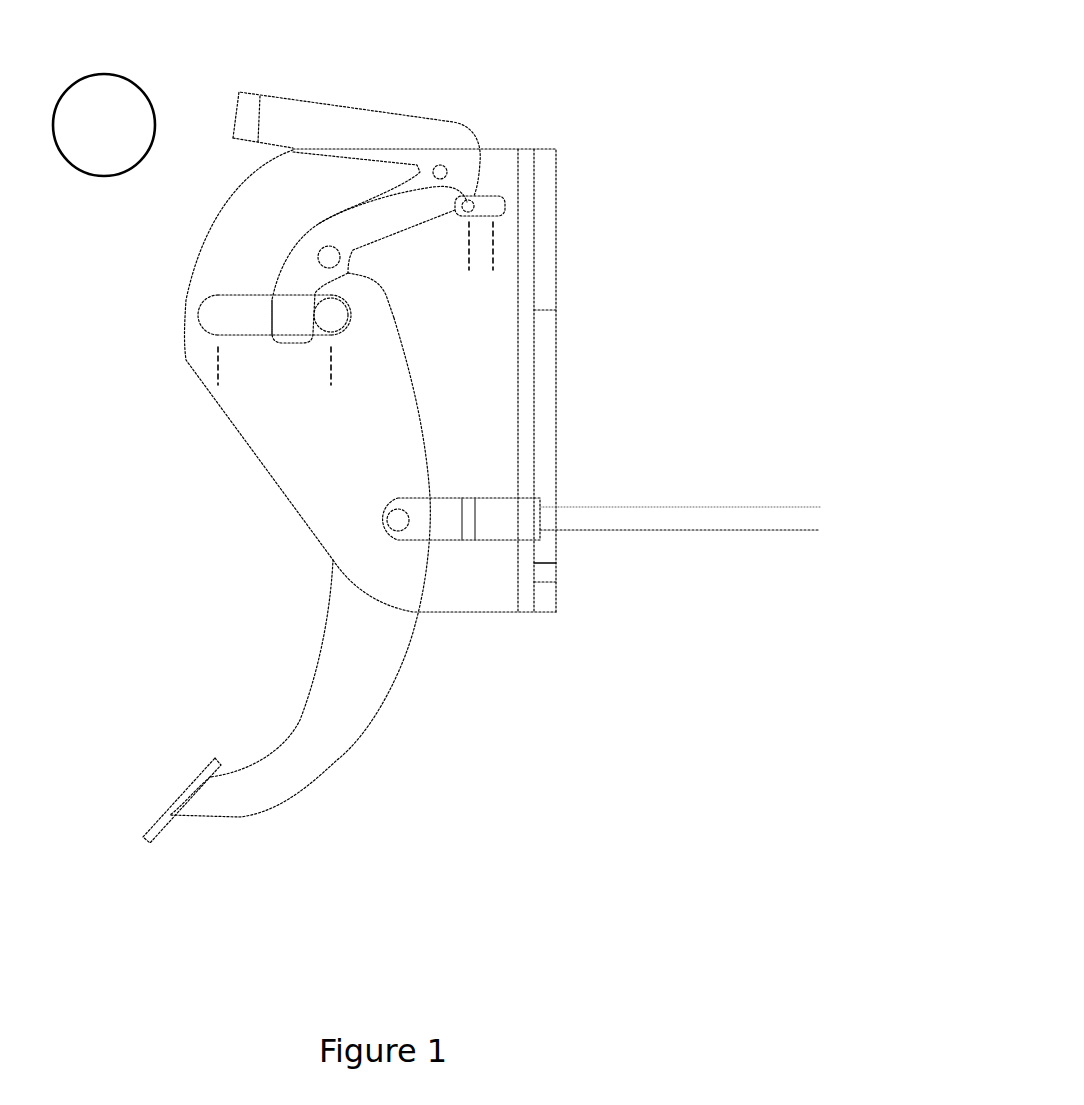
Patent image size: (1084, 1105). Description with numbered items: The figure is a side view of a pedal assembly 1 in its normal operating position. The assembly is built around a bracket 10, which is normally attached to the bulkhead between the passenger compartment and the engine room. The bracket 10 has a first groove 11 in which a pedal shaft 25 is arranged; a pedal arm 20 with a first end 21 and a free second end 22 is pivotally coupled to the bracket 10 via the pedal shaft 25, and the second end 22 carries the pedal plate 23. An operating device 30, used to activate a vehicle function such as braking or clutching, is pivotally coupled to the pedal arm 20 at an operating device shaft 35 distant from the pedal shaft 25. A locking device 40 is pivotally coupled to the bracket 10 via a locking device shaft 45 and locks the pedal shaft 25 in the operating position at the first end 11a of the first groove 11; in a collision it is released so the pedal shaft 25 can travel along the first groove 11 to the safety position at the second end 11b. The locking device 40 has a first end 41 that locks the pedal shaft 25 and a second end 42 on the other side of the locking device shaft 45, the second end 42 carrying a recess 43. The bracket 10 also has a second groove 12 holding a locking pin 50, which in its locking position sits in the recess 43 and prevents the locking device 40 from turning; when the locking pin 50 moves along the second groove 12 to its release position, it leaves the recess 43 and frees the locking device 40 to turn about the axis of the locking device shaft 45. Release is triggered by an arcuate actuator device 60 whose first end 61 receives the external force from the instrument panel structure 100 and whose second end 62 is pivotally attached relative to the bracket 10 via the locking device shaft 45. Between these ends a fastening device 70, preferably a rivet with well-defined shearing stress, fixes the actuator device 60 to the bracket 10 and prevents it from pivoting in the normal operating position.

The pedal assembly 1 is at (610, 125).
The bracket 10 is at (503, 460).
The first groove 11 is at (240, 318).
The first end of the first groove 11a is at (338, 317).
The second end of the first groove 11b is at (198, 313).
The second groove 12 is at (493, 203).
The pedal arm 20 is at (333, 702).
The first end of the pedal arm 21 is at (383, 312).
The second end of the pedal arm 22 is at (213, 810).
The pedal plate 23 is at (170, 798).
The pedal shaft 25 is at (331, 318).
The operating device 30 is at (490, 522).
The operating device shaft 35 is at (398, 522).
The locking device 40 is at (287, 274).
The first end of the locking device 41 is at (285, 328).
The second end of the locking device 42 is at (451, 193).
The recess 43 is at (465, 180).
The locking device shaft 45 is at (334, 257).
The locking pin 50 is at (477, 208).
The actuator device 60 is at (347, 127).
The first end of the actuator device 61 is at (253, 103).
The second end of the actuator device 62 is at (373, 246).
The fastening device 70 is at (440, 165).
The instrument panel structure 100 is at (98, 102).